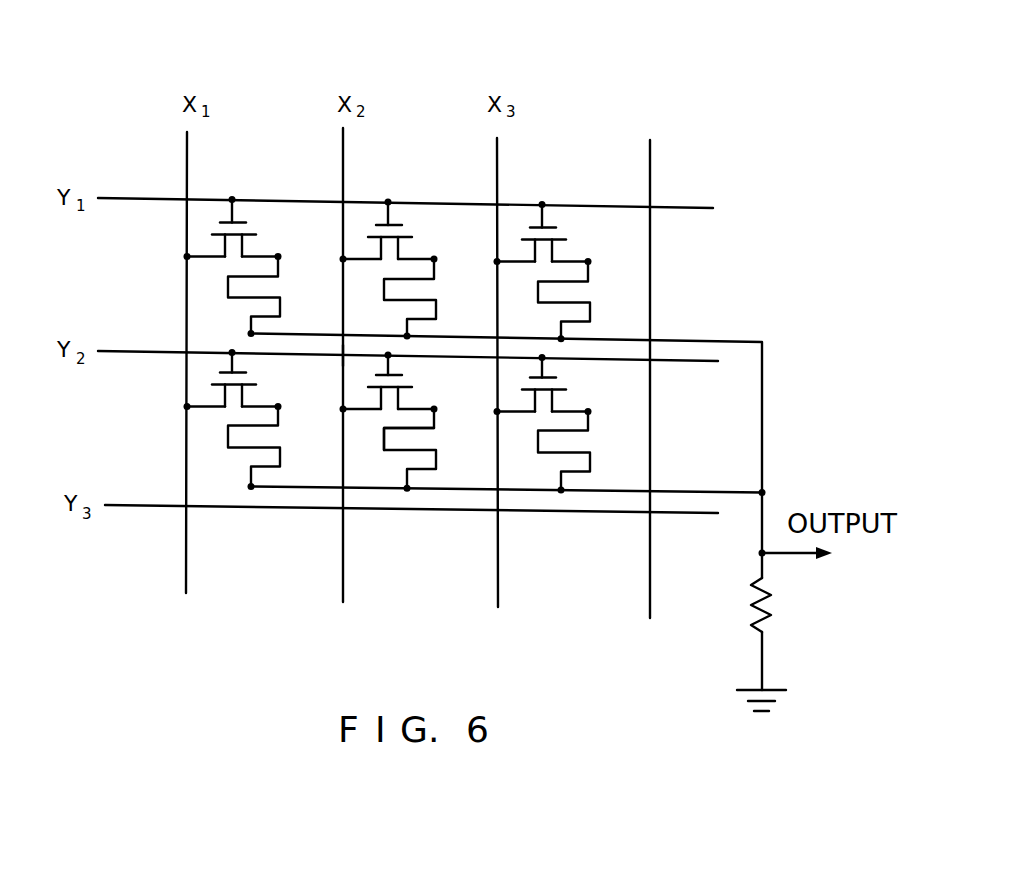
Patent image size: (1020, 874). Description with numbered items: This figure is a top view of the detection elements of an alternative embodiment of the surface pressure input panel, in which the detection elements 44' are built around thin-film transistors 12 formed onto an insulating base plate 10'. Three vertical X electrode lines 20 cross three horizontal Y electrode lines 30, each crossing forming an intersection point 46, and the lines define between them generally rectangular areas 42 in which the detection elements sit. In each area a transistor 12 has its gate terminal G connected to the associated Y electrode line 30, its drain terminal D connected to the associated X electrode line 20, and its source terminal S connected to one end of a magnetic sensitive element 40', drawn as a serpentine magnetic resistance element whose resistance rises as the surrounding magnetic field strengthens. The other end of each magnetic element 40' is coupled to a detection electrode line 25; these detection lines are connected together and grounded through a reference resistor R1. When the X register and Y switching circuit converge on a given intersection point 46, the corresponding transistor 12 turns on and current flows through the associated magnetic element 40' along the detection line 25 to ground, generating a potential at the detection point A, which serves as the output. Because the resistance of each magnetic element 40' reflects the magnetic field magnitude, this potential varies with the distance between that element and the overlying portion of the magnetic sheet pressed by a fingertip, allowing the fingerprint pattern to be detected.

The insulating base plate 10' is at (408, 319).
The thin-film transistor 12 is at (403, 386).
The X electrode line 20 is at (497, 166).
The detection electrode line 25 is at (708, 342).
The Y electrode line 30 is at (135, 508).
The magnetic sensitive element 40' is at (433, 450).
The rectangular area 42 is at (357, 447).
The detection element 44' is at (508, 536).
The intersection point 46 is at (343, 355).
The gate terminal G is at (232, 199).
The source terminal S is at (278, 257).
The drain terminal D is at (187, 257).
The detection point A is at (776, 559).
The reference resistor R1 is at (780, 605).